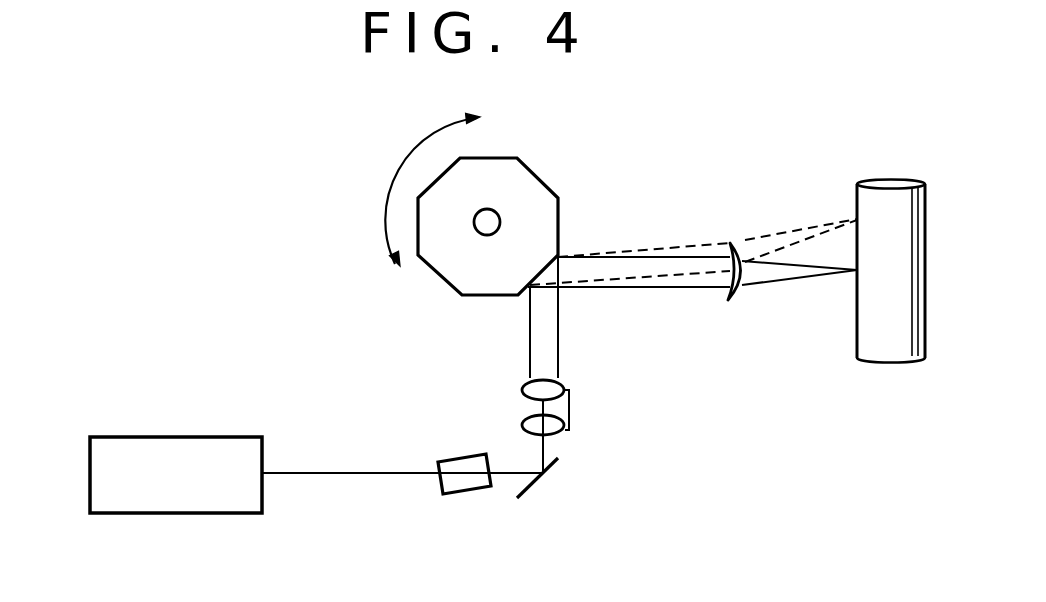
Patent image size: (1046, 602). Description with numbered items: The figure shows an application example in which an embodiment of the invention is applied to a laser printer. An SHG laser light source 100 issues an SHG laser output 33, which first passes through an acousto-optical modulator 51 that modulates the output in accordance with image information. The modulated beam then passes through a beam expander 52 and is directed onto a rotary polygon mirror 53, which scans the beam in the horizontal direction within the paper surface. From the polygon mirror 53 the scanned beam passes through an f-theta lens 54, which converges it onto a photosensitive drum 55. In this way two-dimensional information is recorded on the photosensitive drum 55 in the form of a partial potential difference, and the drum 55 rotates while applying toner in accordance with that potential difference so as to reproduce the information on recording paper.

The SHG laser light source 100 is at (202, 437).
The SHG laser output 33 is at (307, 473).
The acousto-optical modulator 51 is at (463, 494).
The beam expander 52 is at (570, 410).
The rotary polygon mirror 53 is at (537, 178).
The f-theta lens 54 is at (730, 242).
The photosensitive drum 55 is at (857, 340).